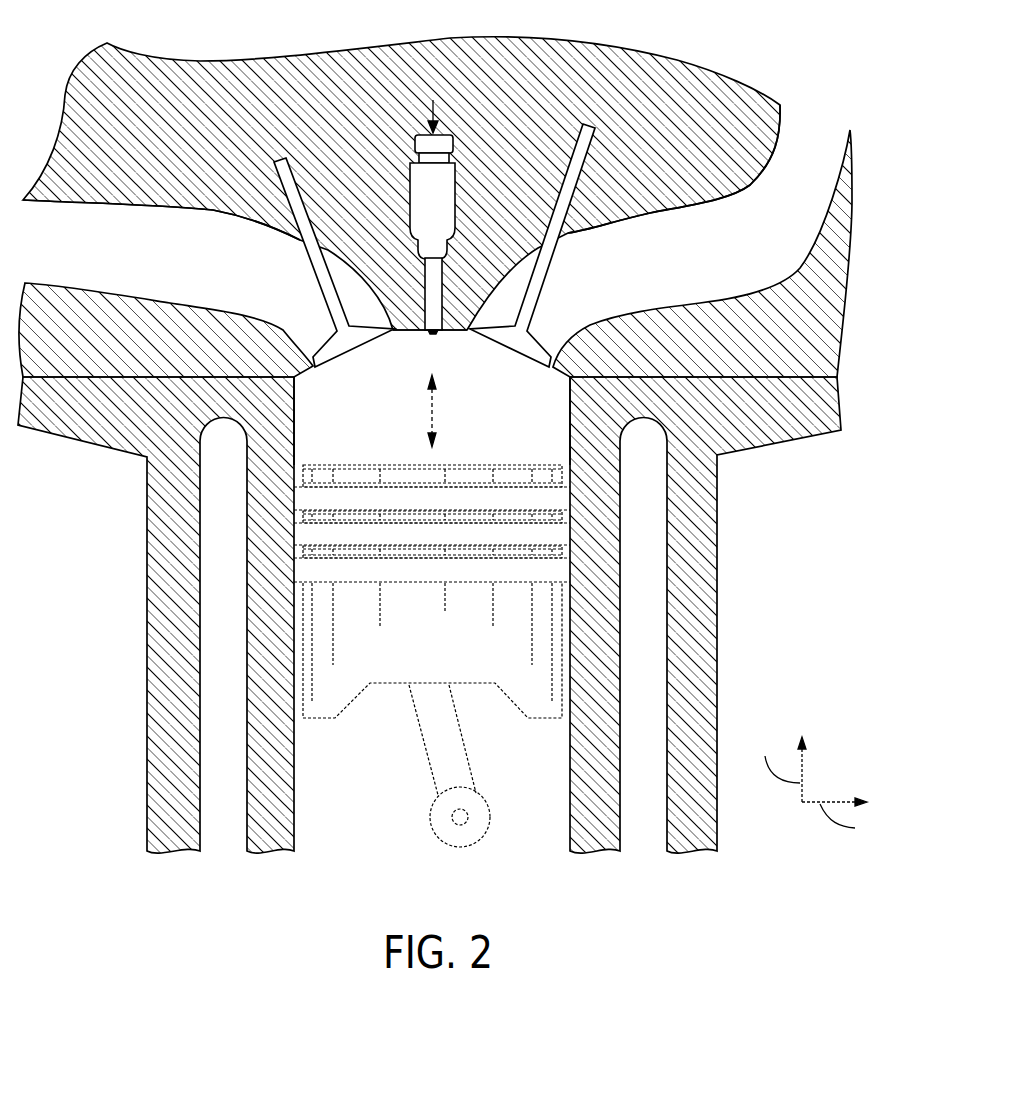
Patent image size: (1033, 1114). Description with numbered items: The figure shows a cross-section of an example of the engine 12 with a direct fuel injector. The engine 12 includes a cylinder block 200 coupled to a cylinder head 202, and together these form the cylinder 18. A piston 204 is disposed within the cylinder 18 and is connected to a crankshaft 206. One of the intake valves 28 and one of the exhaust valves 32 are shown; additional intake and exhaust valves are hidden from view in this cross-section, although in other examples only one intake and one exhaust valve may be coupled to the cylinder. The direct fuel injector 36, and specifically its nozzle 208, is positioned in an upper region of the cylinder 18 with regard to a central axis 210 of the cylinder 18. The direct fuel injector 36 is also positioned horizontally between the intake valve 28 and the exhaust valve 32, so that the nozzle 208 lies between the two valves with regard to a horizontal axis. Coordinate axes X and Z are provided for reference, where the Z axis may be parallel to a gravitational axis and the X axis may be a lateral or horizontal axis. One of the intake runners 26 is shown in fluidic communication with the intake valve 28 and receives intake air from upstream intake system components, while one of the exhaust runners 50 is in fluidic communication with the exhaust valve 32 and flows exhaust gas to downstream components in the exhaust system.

The engine 12 is at (462, 442).
The cylinder 18 is at (504, 426).
The intake runner 26 is at (217, 272).
The intake valve 28 is at (302, 265).
The exhaust valve 32 is at (550, 273).
The direct fuel injector 36 is at (437, 231).
The exhaust runner 50 is at (666, 272).
The cylinder block 200 is at (158, 426).
The cylinder head 202 is at (153, 341).
The piston 204 is at (448, 667).
The crankshaft 206 is at (488, 828).
The nozzle 208 is at (428, 336).
The central axis 210 is at (427, 417).